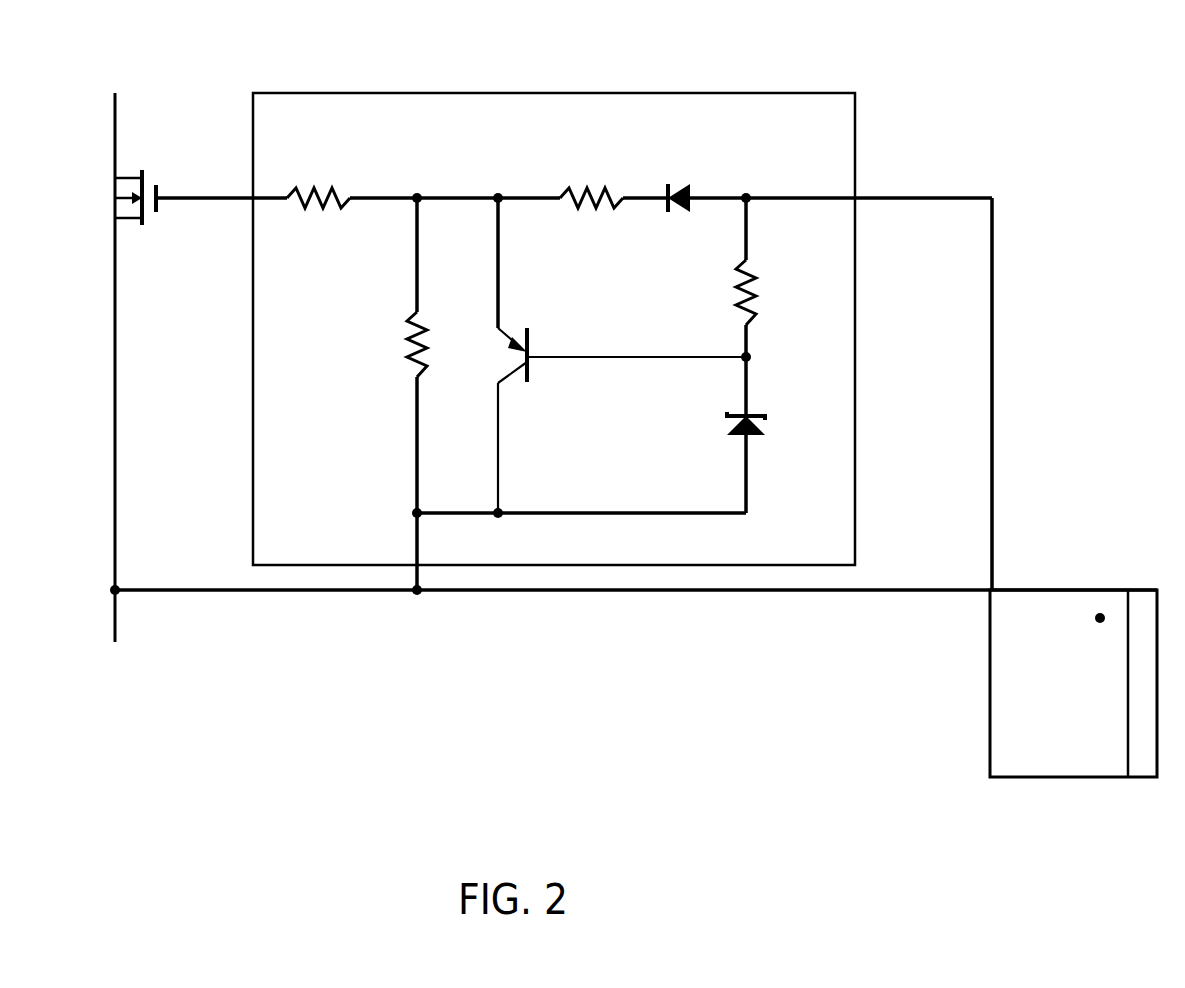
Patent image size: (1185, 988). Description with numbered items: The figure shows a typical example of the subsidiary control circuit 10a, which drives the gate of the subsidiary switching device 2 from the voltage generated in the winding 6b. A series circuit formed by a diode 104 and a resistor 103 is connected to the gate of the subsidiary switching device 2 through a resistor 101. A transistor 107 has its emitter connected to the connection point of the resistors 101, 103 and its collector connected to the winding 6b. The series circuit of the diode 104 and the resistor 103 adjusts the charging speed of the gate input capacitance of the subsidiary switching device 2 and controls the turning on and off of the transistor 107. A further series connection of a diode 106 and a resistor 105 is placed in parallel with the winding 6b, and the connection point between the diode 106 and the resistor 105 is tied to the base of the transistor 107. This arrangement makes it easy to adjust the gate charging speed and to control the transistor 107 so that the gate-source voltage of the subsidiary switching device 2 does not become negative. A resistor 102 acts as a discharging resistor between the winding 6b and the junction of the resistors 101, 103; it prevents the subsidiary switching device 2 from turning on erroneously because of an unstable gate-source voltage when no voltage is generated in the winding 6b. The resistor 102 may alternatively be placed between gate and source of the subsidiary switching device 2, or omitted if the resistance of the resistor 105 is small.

The subsidiary switching device 2 is at (92, 207).
The subsidiary control circuit 10a is at (483, 73).
The resistor 101 is at (335, 170).
The resistor 102 is at (390, 330).
The resistor 103 is at (597, 170).
The diode 104 is at (682, 167).
The resistor 105 is at (763, 282).
The diode 106 is at (763, 455).
The transistor 107 is at (538, 398).
The winding 6b is at (1118, 702).